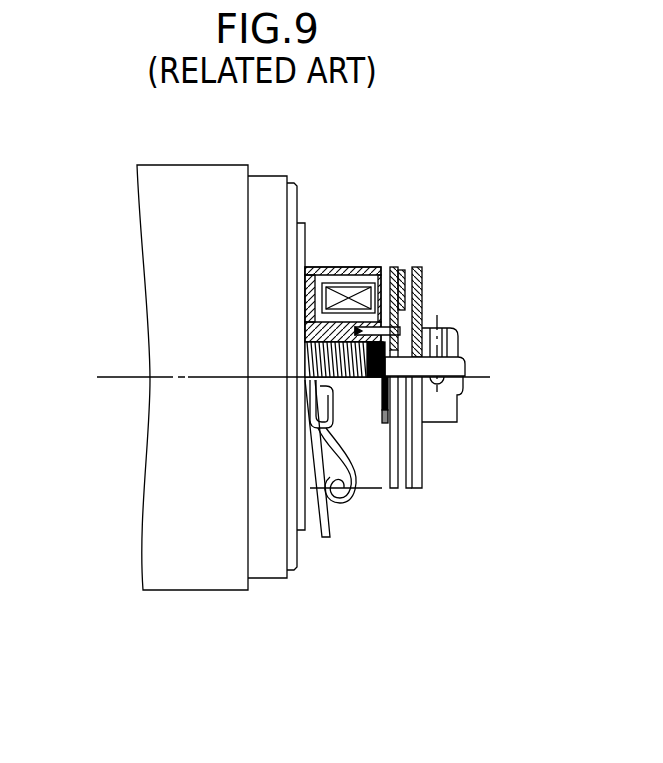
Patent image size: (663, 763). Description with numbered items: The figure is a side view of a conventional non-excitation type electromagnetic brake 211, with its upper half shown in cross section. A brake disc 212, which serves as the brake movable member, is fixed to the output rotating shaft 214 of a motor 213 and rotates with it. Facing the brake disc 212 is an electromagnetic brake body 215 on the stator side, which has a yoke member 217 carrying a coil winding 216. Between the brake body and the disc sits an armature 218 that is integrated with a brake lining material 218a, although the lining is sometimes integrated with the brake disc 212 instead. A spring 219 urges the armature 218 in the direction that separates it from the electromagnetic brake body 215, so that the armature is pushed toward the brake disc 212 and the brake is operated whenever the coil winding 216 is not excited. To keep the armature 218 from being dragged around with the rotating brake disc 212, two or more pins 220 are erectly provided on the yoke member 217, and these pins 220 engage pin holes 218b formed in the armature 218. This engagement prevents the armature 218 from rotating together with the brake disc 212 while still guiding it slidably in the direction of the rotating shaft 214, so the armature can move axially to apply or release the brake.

The electromagnetic brake 211 is at (402, 158).
The brake disc 212 is at (422, 450).
The motor 213 is at (192, 165).
The output rotating shaft 214 is at (455, 366).
The electromagnetic brake body 215 is at (330, 264).
The coil winding 216 is at (347, 293).
The yoke member 217 is at (305, 330).
The armature 218 is at (393, 267).
The brake lining material 218a is at (403, 270).
The pin holes 218b is at (413, 336).
The spring 219 is at (305, 360).
The pins 220 is at (365, 318).